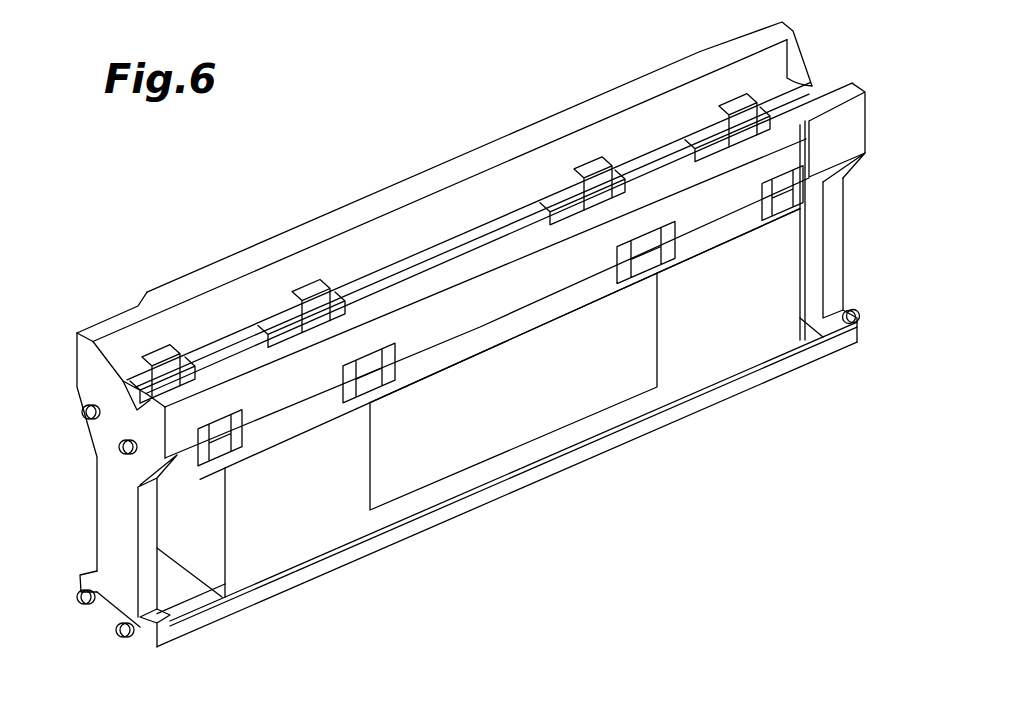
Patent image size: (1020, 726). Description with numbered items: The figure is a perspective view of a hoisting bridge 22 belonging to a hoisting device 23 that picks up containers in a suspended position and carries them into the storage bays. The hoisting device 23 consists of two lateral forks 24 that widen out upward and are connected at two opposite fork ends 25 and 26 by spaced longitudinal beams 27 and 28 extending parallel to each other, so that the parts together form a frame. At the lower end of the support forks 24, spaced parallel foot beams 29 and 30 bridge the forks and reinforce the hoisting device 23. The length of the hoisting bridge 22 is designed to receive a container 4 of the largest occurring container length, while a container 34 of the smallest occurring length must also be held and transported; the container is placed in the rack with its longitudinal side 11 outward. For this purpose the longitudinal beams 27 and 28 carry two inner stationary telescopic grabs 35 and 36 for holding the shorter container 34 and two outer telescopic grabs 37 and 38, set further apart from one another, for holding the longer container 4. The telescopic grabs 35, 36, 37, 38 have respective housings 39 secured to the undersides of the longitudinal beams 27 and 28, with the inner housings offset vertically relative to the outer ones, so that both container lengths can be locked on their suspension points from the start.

The container 4 is at (736, 325).
The longitudinal side 11 is at (593, 408).
The hoisting bridge 22 is at (335, 210).
The hoisting device 23 is at (355, 164).
The lateral fork 24 is at (113, 518).
The fork end 25 is at (77, 342).
The fork end 26 is at (120, 395).
The longitudinal beam 27 is at (432, 178).
The longitudinal beam 28 is at (567, 270).
The foot beam 29 is at (160, 558).
The foot beam 30 is at (207, 608).
The container 34 is at (518, 406).
The inner stationary telescopic grab 35 is at (398, 383).
The inner stationary telescopic grab 36 is at (667, 256).
The outer telescopic grab 37 is at (245, 440).
The outer telescopic grab 38 is at (780, 212).
The housing 39 is at (165, 373).